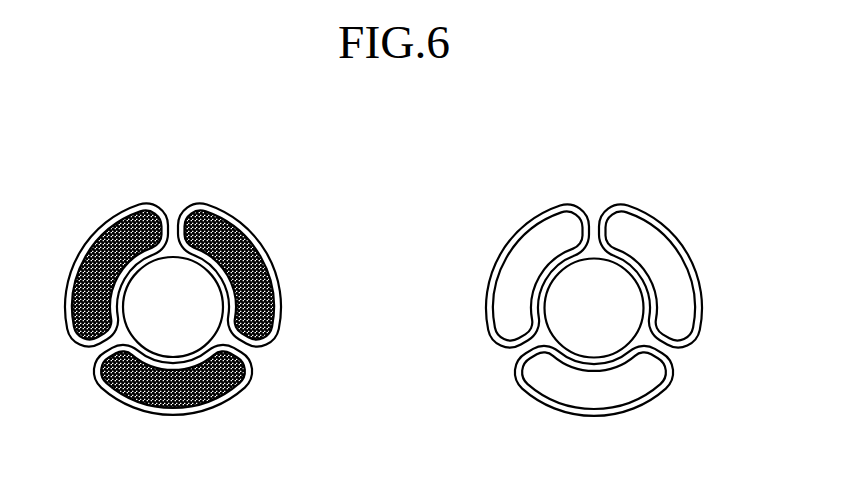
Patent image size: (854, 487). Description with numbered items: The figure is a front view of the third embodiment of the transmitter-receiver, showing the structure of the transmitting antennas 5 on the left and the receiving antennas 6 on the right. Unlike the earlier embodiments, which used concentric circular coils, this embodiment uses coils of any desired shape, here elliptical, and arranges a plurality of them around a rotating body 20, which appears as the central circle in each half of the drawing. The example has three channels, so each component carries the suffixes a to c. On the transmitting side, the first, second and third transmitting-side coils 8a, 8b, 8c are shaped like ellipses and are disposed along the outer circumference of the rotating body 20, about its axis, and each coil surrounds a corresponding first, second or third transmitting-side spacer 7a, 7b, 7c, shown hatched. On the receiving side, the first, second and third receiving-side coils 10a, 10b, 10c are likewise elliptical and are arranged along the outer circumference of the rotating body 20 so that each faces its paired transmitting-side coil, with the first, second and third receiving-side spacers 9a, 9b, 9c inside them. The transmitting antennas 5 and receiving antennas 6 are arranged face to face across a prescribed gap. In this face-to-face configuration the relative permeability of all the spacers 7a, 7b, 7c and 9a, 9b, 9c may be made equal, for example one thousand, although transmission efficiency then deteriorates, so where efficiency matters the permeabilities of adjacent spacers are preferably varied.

The transmitting antennas 5 is at (88, 165).
The receiving antennas 6 is at (511, 165).
The first transmitting-side spacer 7a is at (110, 243).
The second transmitting-side spacer 7b is at (145, 390).
The third transmitting-side spacer 7c is at (234, 245).
The first transmitting-side coil 8a is at (65, 285).
The second transmitting-side coil 8b is at (205, 412).
The third transmitting-side coil 8c is at (283, 284).
The first receiving-side spacer 9a is at (655, 245).
The second receiving-side spacer 9b is at (627, 388).
The third receiving-side spacer 9c is at (537, 245).
The first receiving-side coil 10a is at (703, 285).
The second receiving-side coil 10b is at (567, 410).
The third receiving-side coil 10c is at (490, 285).
The rotating body 20 is at (147, 313).